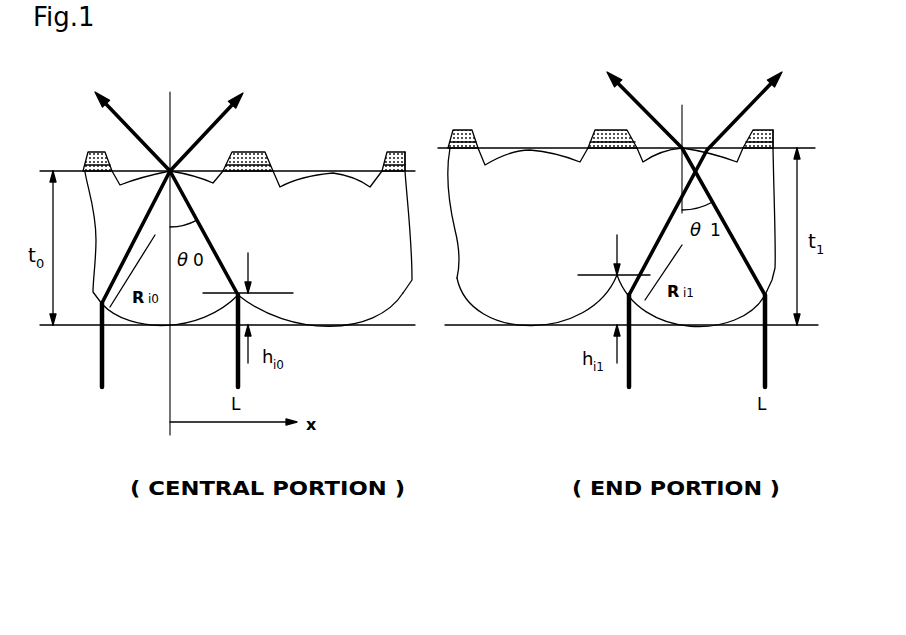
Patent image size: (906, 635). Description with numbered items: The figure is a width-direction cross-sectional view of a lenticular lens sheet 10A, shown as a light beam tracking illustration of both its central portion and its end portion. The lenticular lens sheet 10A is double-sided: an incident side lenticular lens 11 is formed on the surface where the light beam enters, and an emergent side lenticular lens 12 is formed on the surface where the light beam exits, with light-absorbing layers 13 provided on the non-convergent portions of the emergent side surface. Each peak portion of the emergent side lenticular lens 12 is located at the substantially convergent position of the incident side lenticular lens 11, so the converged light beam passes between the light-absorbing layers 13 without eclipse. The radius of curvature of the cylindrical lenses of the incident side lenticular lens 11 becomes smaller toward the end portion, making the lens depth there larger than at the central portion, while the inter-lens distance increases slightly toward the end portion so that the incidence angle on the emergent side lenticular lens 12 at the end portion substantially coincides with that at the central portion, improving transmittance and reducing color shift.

The lenticular lens sheet 10A is at (477, 572).
The incident side lenticular lens 11 is at (370, 325).
The emergent side lenticular lens 12 is at (365, 174).
The light-absorbing layer 13 is at (255, 152).